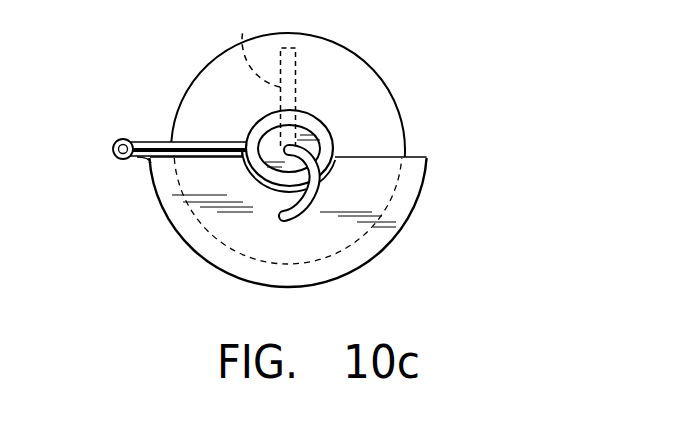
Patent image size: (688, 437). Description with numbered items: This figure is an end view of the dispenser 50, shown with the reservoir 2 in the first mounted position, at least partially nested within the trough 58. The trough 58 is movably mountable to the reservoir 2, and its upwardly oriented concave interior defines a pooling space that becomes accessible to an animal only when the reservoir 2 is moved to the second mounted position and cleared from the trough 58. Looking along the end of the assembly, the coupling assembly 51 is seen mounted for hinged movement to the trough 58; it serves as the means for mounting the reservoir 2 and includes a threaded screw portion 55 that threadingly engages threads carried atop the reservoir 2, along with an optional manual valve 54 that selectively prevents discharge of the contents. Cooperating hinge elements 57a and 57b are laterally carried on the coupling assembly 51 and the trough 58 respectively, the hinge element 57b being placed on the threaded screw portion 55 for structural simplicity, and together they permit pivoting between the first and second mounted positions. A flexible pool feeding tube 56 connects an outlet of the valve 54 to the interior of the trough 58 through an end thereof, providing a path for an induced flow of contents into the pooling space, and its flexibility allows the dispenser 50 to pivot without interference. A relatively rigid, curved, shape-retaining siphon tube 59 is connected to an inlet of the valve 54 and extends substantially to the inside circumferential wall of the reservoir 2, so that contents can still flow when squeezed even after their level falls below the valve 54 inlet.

The reservoir 2 is at (399, 124).
The dispenser 50 is at (156, 278).
The coupling assembly 51 is at (236, 128).
The valve 54 is at (318, 143).
The threaded screw portion 55 is at (316, 115).
The pool feeding tube 56 is at (305, 216).
The hinge element 57a is at (160, 141).
The hinge element 57b is at (143, 158).
The trough 58 is at (416, 206).
The siphon tube 59 is at (254, 45).